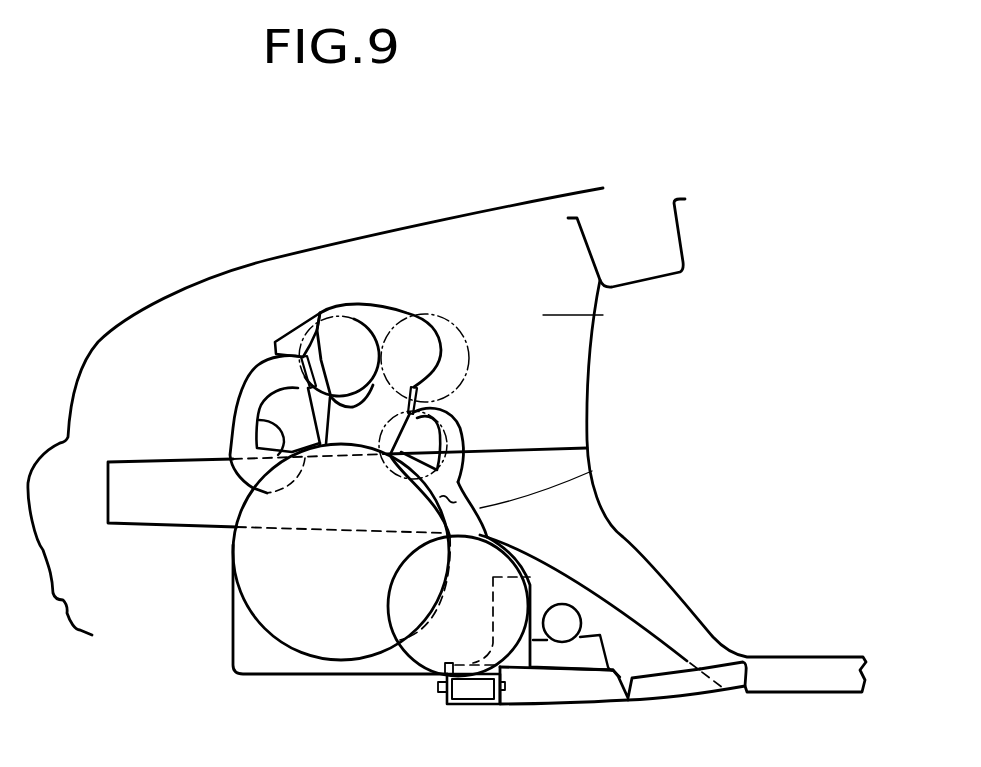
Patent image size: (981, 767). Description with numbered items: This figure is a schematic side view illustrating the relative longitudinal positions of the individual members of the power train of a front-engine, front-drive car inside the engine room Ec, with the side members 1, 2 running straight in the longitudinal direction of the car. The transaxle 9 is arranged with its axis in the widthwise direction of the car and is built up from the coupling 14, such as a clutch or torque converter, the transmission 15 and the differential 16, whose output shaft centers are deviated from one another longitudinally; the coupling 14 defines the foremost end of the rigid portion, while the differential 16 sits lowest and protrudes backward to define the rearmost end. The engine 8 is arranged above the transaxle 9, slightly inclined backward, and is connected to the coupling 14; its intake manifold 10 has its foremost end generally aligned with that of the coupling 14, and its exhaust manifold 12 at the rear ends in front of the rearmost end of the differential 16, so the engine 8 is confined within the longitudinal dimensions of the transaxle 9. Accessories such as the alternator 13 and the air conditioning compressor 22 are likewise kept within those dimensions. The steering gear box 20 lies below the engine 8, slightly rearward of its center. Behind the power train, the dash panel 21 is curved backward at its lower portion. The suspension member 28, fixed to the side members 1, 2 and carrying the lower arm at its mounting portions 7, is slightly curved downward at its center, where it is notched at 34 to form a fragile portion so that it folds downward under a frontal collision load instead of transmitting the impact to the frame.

The side member 1 is at (135, 468).
The side member 2 is at (315, 411).
The mounting portion 7 is at (480, 692).
The engine 8 is at (375, 308).
The transaxle 9 is at (217, 567).
The intake manifold 10 is at (258, 367).
The exhaust manifold 12 is at (457, 413).
The alternator 13 is at (303, 337).
The coupling 14 is at (248, 608).
The transmission 15 is at (592, 471).
The differential 16 is at (388, 615).
The steering gear box 20 is at (580, 615).
The dash panel 21 is at (594, 362).
The air conditioning compressor 22 is at (440, 320).
The suspension member 28 is at (683, 680).
The notched portion 34 is at (620, 678).
The engine room Ec is at (603, 315).